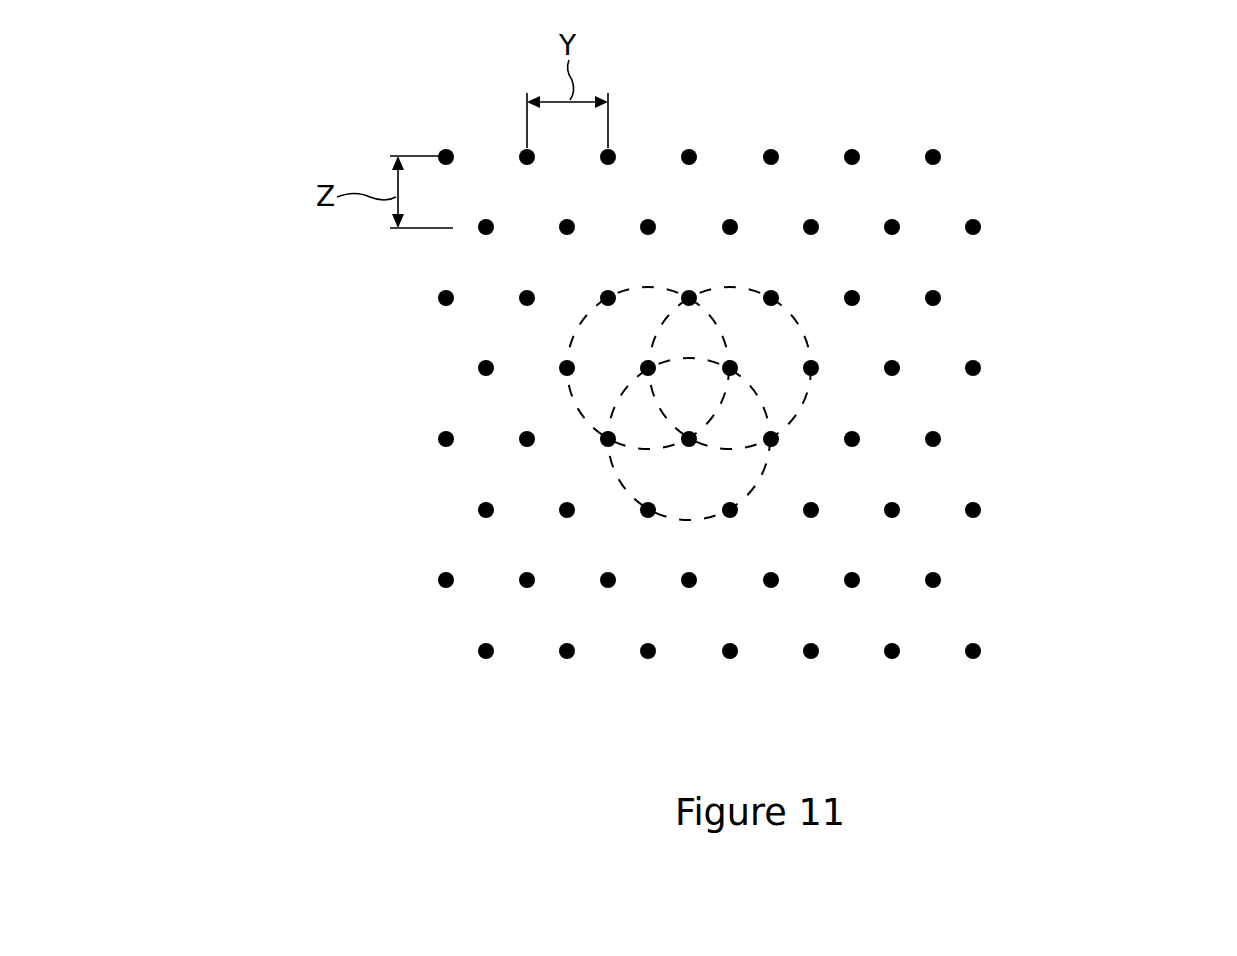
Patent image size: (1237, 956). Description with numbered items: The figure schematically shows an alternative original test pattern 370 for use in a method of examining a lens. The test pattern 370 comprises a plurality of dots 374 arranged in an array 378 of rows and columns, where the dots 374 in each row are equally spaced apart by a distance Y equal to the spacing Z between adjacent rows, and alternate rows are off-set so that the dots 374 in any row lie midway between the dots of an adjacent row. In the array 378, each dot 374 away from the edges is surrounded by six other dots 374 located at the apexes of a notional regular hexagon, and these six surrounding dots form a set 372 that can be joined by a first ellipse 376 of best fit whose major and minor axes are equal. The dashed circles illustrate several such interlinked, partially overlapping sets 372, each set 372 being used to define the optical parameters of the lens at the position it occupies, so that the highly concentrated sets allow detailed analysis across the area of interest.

The test pattern 370 is at (806, 435).
The set of dots 372 is at (779, 296).
The dot 374 is at (981, 368).
The first ellipse 376 is at (622, 292).
The array 378 is at (386, 491).